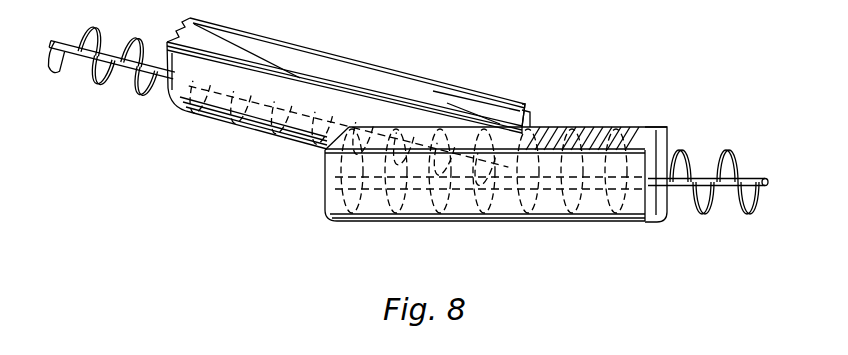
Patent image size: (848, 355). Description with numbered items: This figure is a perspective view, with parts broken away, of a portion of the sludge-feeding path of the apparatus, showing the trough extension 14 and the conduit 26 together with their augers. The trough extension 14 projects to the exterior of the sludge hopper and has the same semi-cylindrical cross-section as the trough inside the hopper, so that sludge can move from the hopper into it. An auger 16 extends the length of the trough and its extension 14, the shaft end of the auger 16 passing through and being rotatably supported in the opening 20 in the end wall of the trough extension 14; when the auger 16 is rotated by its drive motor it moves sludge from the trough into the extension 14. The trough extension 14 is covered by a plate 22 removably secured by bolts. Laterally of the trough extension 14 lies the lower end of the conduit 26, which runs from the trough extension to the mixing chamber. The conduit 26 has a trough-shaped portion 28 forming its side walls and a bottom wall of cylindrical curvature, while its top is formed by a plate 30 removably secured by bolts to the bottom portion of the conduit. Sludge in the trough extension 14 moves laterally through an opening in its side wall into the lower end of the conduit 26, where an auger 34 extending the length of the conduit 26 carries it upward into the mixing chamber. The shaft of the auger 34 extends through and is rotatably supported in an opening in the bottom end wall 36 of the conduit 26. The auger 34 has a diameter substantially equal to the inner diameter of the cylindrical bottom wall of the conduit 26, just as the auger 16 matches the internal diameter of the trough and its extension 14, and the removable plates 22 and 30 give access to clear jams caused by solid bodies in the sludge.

The trough extension 14 is at (513, 222).
The auger 16 is at (706, 210).
The opening in end wall of trough extension 20 is at (332, 183).
The plate 22 is at (590, 130).
The conduit 26 is at (257, 120).
The trough-shaped portion 28 is at (210, 106).
The plate 30 is at (350, 66).
The auger 34 is at (110, 86).
The bottom end wall 36 is at (522, 120).